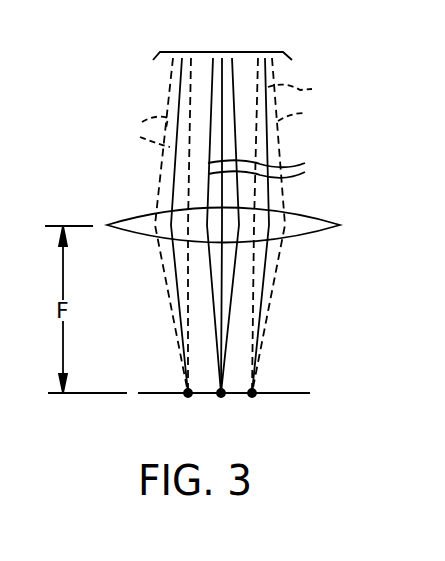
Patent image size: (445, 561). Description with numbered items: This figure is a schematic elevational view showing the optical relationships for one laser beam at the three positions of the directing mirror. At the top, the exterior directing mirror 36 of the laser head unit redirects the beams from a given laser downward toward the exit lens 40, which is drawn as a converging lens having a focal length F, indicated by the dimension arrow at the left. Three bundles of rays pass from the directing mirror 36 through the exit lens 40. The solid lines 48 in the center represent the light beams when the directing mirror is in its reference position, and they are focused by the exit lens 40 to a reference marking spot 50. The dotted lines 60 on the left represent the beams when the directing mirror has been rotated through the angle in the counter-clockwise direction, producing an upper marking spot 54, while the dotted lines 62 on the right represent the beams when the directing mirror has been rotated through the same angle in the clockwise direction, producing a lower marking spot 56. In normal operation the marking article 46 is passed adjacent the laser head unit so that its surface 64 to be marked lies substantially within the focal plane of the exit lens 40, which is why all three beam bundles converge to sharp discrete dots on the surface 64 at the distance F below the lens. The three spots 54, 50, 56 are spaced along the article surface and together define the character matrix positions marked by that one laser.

The exterior directing mirror 36 is at (247, 52).
The exit lens 40 is at (320, 213).
The marking article 46 is at (168, 429).
The solid lines (reference-position light beams) 48 is at (208, 153).
The reference marking spots 50 is at (221, 397).
The upper marking spots 54 is at (188, 397).
The lower marking spots 56 is at (252, 397).
The dotted lines (counter-clockwise-rotated light beams) 60 is at (180, 138).
The dotted lines (clockwise-rotated light beams) 62 is at (268, 103).
The surface to be marked 64 is at (290, 391).